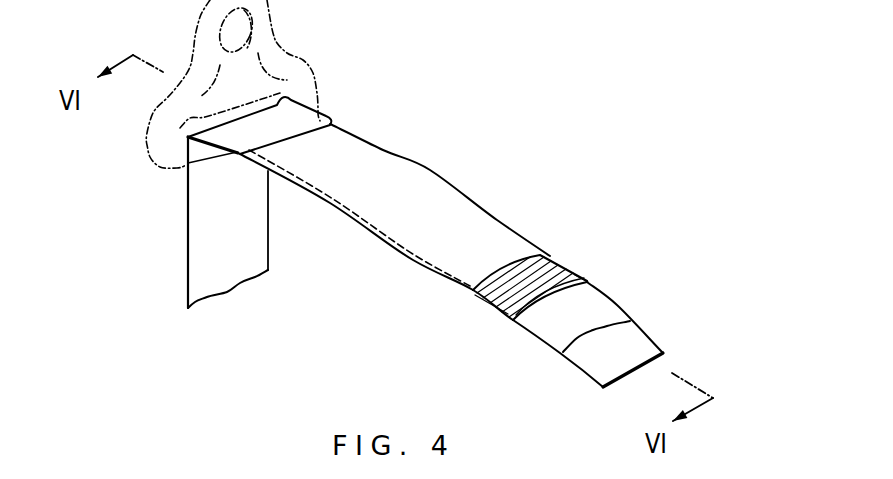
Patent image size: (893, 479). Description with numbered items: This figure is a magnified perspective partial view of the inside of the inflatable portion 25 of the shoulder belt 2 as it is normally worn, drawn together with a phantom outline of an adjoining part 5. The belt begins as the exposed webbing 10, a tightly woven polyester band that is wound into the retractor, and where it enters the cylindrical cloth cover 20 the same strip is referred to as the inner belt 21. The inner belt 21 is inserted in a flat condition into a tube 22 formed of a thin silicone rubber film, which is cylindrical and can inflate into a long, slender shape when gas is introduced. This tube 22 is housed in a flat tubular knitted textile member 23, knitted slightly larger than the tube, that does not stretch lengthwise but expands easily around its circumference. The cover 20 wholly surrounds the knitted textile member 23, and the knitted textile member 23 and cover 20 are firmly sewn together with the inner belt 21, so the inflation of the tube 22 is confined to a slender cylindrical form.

The shoulder belt 2 is at (482, 242).
The tag member (phantom) 5 is at (305, 58).
The webbing 10 is at (187, 252).
The cover 20 is at (498, 229).
The inner belt 21 is at (653, 350).
The tube 22 is at (612, 306).
The knitted textile member 23 is at (577, 269).
The inflatable portion 25 is at (417, 272).